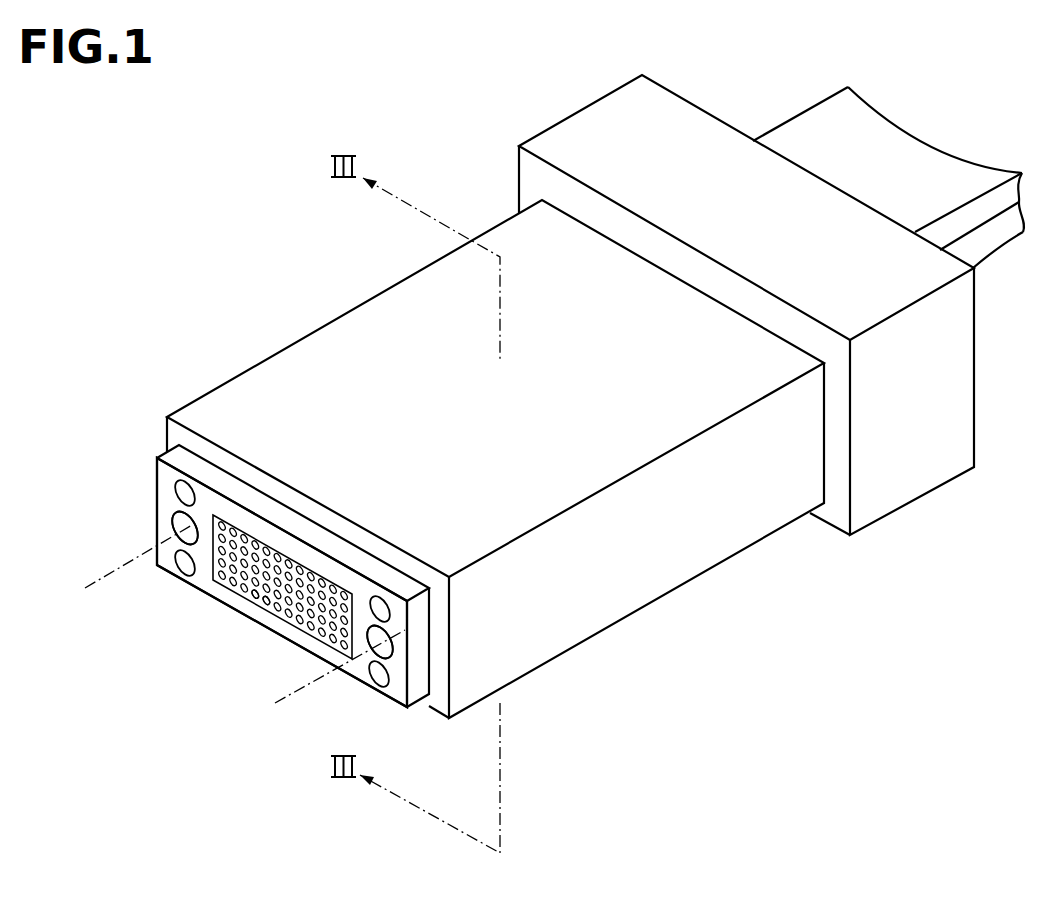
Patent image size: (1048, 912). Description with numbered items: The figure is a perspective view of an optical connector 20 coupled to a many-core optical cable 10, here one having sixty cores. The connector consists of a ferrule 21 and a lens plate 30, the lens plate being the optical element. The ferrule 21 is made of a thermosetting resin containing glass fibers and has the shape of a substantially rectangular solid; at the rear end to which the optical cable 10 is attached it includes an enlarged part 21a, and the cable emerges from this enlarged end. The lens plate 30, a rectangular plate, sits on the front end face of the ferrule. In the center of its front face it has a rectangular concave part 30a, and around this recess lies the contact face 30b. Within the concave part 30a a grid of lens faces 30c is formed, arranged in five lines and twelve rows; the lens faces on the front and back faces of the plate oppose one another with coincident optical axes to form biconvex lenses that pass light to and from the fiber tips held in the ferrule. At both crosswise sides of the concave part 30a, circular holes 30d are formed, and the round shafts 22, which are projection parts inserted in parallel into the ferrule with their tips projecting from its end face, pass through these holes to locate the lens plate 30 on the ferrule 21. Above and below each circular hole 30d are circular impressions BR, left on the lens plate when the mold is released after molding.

The optical cable 10 is at (912, 165).
The optical connector 20 is at (318, 317).
The ferrule 21 is at (578, 468).
The enlarged part 21a is at (913, 473).
The round shaft 22 is at (168, 548).
The lens plate 30 is at (163, 452).
The concave part 30a is at (290, 553).
The contact face 30b is at (357, 580).
The lens face 30c is at (267, 604).
The circular hole 30d is at (183, 527).
The circular impression BR is at (190, 492).